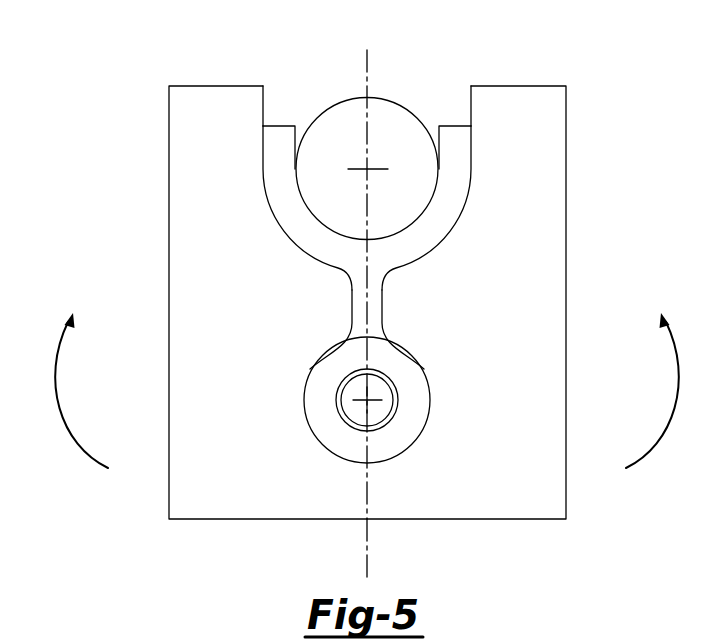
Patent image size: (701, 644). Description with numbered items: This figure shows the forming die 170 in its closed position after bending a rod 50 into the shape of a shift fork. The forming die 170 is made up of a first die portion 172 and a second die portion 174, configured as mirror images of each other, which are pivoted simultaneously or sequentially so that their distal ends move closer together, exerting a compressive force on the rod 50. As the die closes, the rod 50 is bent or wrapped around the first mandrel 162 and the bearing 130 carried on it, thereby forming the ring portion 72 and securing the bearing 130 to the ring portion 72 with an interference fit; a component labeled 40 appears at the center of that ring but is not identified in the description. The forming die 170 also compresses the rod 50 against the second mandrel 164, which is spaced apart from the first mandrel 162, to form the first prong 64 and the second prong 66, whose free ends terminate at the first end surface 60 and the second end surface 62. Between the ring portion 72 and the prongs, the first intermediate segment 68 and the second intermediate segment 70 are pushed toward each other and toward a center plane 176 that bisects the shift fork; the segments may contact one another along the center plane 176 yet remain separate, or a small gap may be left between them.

The pin 40 is at (375, 402).
The rod 50 is at (263, 157).
The first end surface 60 is at (278, 123).
The second end surface 62 is at (456, 123).
The first prong 64 is at (264, 190).
The second prong 66 is at (470, 193).
The first intermediate segment 68 is at (352, 307).
The second intermediate segment 70 is at (383, 307).
The ring portion 72 is at (400, 455).
The bearing 130 is at (336, 390).
The first mandrel 162 is at (340, 415).
The second mandrel 164 is at (370, 68).
The forming die 170 is at (205, 526).
The first die portion 172 is at (280, 504).
The second die portion 174 is at (480, 506).
The center plane 176 is at (362, 549).